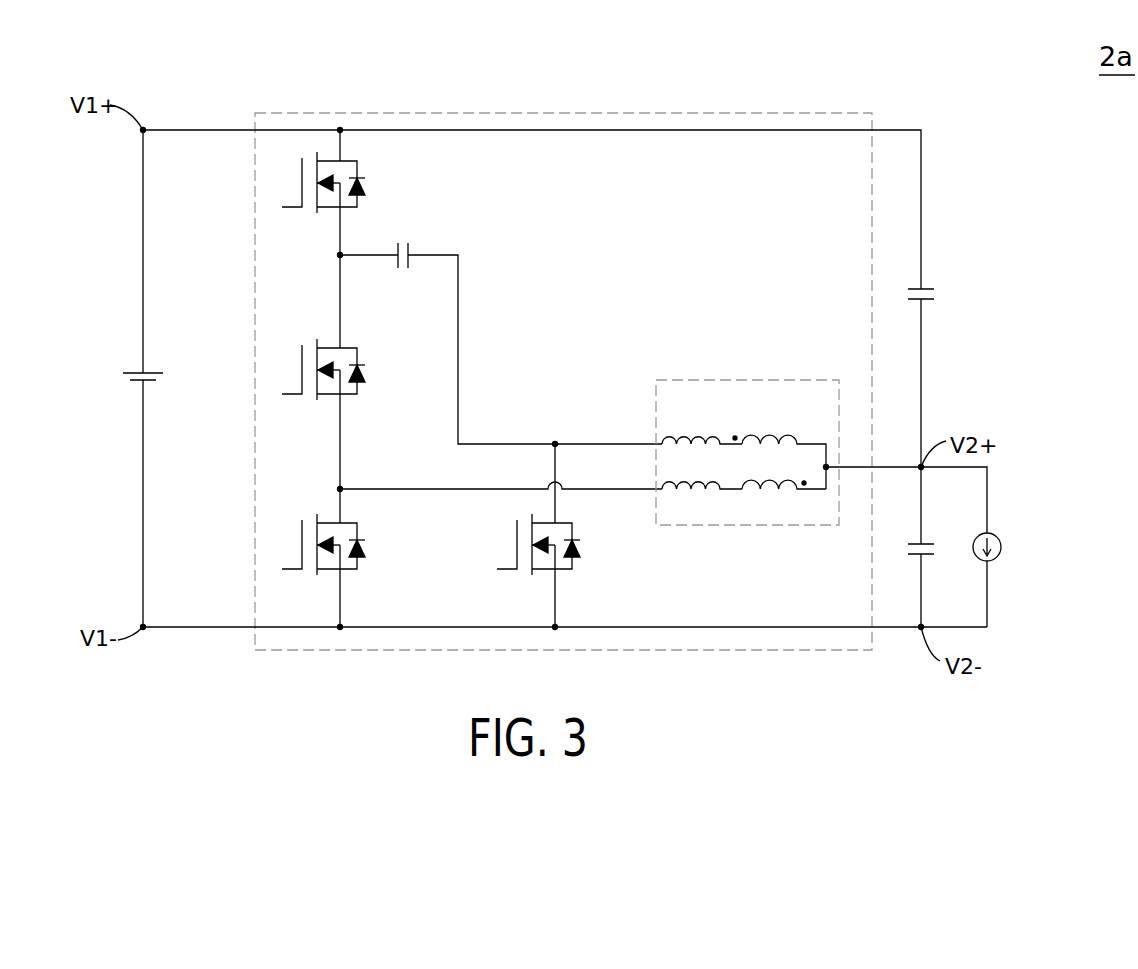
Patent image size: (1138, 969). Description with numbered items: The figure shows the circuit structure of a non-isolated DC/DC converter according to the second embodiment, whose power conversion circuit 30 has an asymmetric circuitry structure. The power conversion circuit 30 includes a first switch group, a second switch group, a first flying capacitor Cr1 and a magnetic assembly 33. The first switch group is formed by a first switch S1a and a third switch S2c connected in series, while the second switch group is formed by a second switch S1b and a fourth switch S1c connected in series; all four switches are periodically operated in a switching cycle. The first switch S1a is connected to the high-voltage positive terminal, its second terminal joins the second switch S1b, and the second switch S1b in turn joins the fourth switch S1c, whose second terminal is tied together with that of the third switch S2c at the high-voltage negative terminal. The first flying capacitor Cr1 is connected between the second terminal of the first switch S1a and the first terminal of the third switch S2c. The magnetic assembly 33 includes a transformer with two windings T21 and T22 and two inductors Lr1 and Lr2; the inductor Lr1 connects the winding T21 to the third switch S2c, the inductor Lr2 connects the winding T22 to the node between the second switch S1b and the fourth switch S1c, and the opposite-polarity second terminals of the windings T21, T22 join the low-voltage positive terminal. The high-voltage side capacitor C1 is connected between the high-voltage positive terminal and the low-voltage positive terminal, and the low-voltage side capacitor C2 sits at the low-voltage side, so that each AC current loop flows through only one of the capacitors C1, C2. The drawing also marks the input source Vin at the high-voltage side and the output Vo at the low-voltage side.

The power conversion circuit 30 is at (553, 113).
The magnetic assembly 33 is at (747, 380).
The first switch S1a is at (316, 200).
The second switch S1b is at (316, 386).
The fourth switch S1c is at (316, 560).
The third switch S2c is at (531, 535).
The first flying capacitor Cr1 is at (501, 331).
The high-voltage side capacitor C1 is at (933, 281).
The low-voltage side capacitor C2 is at (933, 536).
The inductor Lr1 is at (702, 424).
The inductor Lr2 is at (702, 471).
The winding T21 is at (779, 447).
The winding T22 is at (784, 474).
The input voltage source Vin is at (120, 378).
The output current source / load Vo is at (1006, 541).